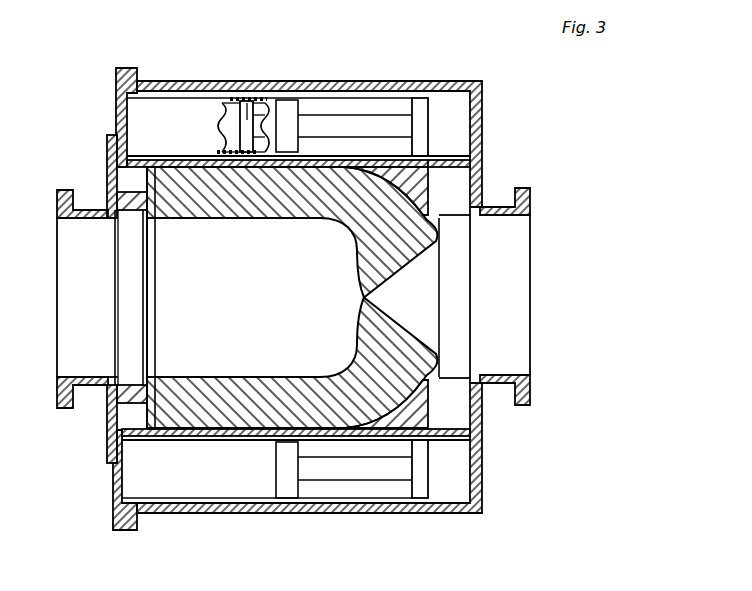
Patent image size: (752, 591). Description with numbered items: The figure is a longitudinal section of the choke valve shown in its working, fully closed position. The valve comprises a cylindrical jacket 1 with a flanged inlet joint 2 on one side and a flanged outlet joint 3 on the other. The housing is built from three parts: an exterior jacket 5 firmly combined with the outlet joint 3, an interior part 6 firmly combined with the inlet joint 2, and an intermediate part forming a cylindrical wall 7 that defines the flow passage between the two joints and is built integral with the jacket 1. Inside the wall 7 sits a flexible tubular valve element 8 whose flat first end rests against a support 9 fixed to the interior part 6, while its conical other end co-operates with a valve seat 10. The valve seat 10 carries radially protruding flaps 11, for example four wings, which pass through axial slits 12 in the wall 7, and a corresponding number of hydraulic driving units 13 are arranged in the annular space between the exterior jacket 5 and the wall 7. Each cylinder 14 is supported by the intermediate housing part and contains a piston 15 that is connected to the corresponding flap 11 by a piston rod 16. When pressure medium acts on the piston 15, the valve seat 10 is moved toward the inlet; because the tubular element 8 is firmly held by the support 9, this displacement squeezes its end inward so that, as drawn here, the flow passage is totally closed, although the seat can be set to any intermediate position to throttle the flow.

The cylindrical jacket 1 is at (116, 97).
The inlet joint 2 is at (81, 298).
The outlet joint 3 is at (503, 300).
The exterior jacket 5 is at (330, 85).
The interior part 6 is at (107, 153).
The cylindrical wall 7 is at (162, 156).
The flexible tubular valve element 8 is at (267, 187).
The support 9 is at (107, 179).
The valve seat 10 is at (420, 197).
The radially protruding flaps 11 is at (422, 122).
The axial slits 12 is at (345, 163).
The hydraulic driving units 13 is at (142, 122).
The cylinder 14 is at (237, 99).
The stem 15 is at (245, 118).
The piston rod 16 is at (387, 127).